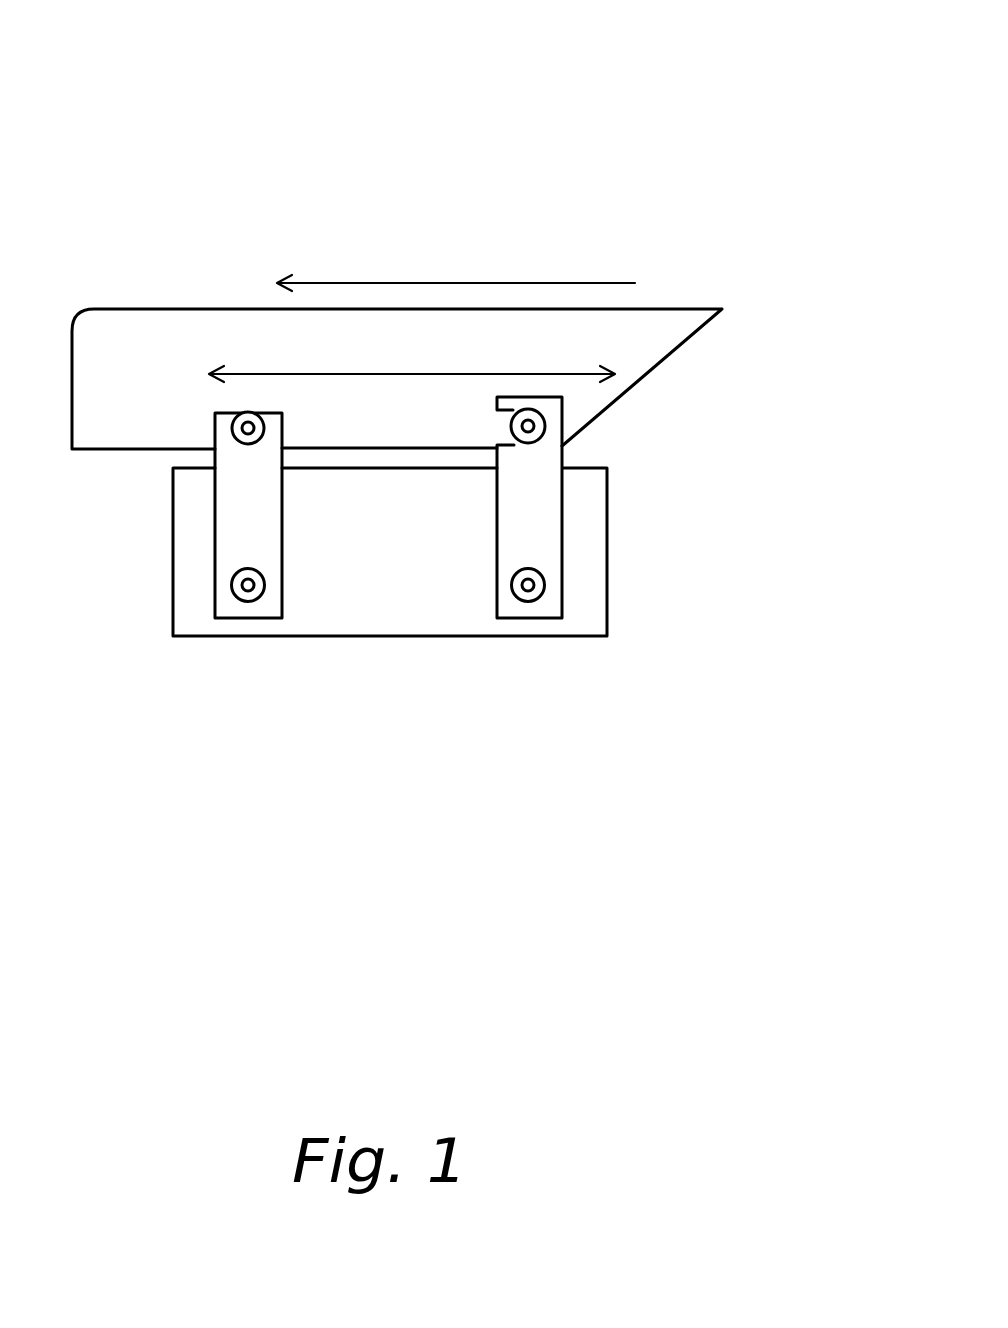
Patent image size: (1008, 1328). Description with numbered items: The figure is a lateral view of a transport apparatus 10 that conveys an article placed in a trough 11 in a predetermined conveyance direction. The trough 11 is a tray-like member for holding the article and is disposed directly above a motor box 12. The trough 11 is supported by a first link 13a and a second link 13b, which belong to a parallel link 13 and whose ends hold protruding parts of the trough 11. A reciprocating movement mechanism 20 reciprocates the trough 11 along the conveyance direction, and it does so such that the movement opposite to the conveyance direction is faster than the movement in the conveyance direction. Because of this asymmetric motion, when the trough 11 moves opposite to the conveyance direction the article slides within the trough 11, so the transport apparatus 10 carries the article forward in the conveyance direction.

The transport apparatus 10 is at (516, 144).
The trough 11 is at (193, 337).
The motor box 12 is at (594, 528).
The parallel link 13 is at (389, 639).
The first link 13a is at (240, 610).
The second link 13b is at (526, 598).
The reciprocating movement mechanism 20 is at (754, 399).